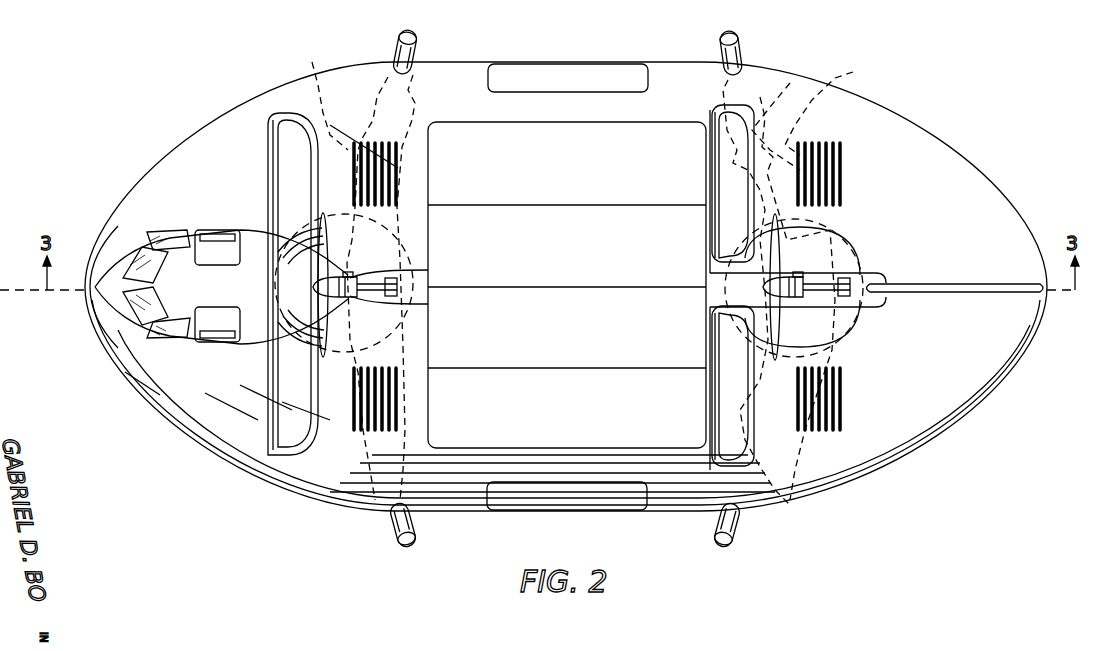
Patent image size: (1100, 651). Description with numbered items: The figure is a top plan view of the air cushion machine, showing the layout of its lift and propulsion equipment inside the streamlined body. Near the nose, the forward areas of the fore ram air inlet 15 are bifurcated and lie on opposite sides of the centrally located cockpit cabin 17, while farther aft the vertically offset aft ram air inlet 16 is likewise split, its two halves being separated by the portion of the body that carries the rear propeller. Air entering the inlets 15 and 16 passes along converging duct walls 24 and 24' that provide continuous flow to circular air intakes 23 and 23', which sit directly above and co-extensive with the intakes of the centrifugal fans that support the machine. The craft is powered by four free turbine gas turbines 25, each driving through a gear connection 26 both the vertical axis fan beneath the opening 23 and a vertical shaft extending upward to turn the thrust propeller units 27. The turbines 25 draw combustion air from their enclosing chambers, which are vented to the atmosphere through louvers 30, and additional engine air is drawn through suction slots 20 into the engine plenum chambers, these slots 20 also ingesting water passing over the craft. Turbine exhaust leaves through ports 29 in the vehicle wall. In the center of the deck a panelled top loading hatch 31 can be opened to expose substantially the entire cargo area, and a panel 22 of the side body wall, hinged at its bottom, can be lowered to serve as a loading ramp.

The fore ram air inlet 15 is at (292, 148).
The aft ram air inlet 16 is at (746, 211).
The cockpit cabin 17 is at (118, 230).
The suction slots 20 is at (274, 170).
The panel 22 is at (538, 78).
The circular air intake 23 is at (272, 271).
The circular air intake 23' is at (829, 274).
The converging duct wall 24 is at (349, 103).
The converging duct wall 24' is at (834, 107).
The free turbine gas turbine 25 is at (425, 72).
The gear connection 26 is at (396, 276).
The thrust propeller unit 27 is at (313, 288).
The port 29 is at (413, 30).
The louvers 30 is at (846, 165).
The panelled top loading hatch 31 is at (546, 254).